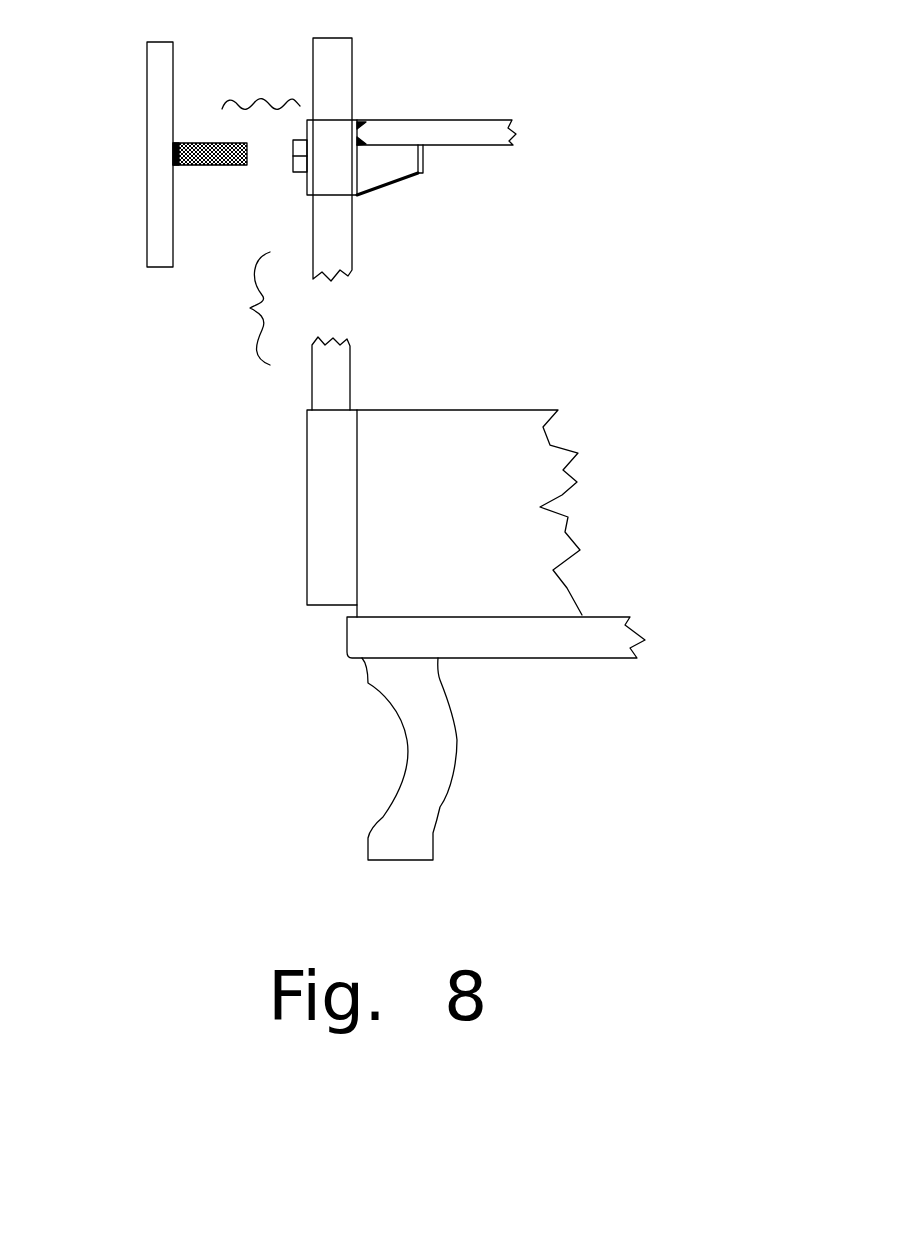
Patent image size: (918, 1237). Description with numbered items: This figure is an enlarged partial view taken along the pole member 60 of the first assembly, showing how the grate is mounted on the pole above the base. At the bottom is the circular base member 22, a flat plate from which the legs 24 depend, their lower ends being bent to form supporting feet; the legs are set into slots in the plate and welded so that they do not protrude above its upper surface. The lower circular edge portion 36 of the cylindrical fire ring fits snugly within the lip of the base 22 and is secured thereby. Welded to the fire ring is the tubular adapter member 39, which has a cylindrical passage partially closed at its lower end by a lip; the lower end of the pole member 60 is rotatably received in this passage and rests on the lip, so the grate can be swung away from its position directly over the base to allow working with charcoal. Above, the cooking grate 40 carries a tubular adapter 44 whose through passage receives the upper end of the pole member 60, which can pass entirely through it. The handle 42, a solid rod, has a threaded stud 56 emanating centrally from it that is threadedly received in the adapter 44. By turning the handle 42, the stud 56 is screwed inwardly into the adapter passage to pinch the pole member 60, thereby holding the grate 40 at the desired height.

The circular base member 22 is at (545, 643).
The legs 24 is at (425, 813).
The lower circular edge portion 36 is at (481, 543).
The tubular adapter member 39 is at (320, 497).
The cooking grate 40 is at (448, 140).
The handle 42 is at (160, 233).
The tubular adapter 44 is at (332, 135).
The threaded stud 56 is at (208, 167).
The pole member 60 is at (337, 380).